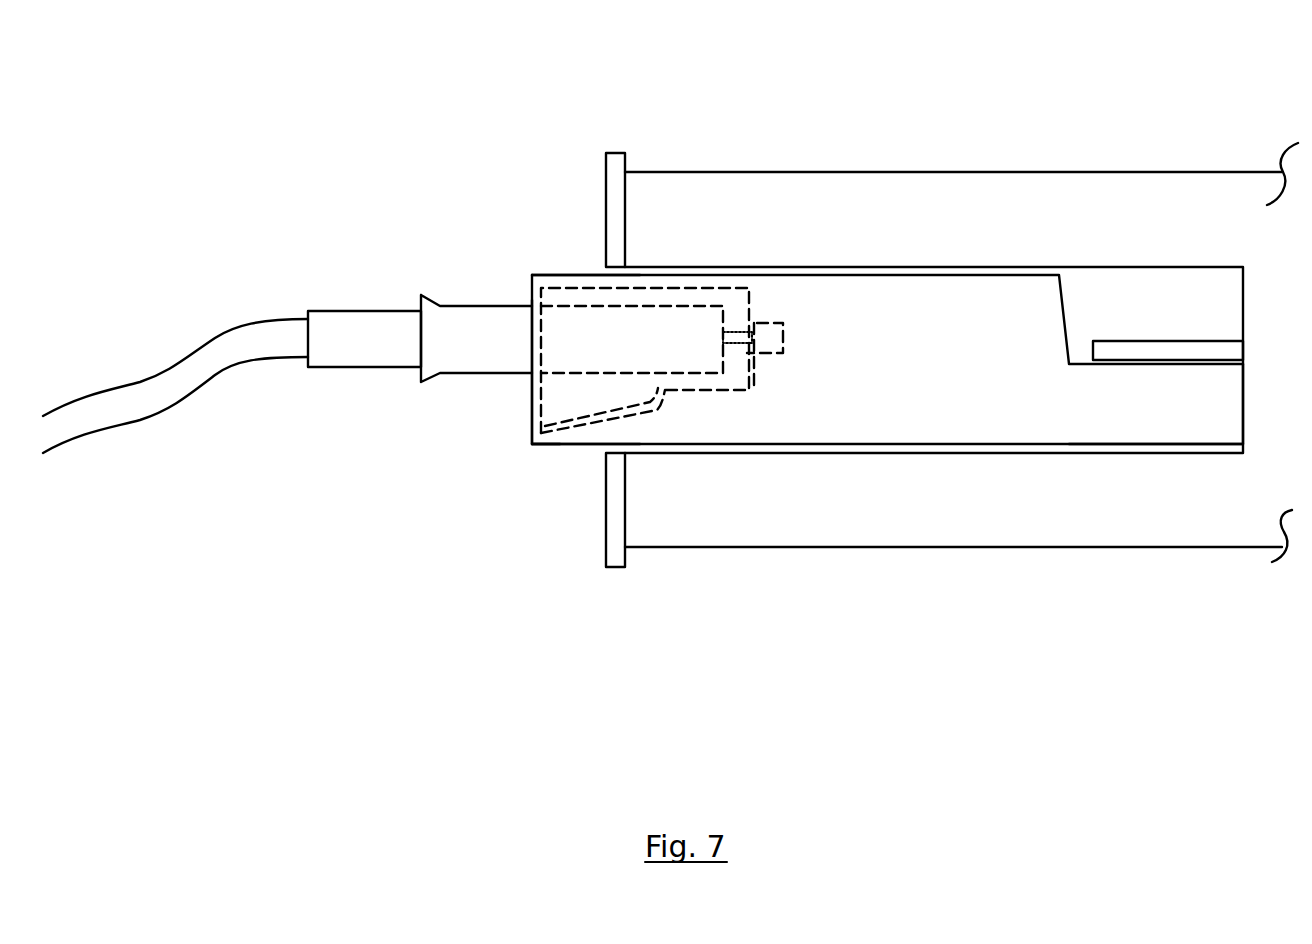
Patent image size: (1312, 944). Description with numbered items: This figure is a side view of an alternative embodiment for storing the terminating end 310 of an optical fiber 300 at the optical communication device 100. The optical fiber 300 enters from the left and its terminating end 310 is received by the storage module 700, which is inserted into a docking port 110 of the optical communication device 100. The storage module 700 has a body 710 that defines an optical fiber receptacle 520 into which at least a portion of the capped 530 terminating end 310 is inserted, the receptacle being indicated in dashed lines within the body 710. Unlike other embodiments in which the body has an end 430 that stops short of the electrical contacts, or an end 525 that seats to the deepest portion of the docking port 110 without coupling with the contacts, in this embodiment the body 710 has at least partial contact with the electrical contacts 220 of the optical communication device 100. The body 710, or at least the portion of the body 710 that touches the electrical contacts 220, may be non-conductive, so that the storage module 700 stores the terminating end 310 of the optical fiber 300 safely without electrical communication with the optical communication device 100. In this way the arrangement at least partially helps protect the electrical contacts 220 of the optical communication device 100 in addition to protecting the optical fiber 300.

The optical communication device 100 is at (755, 128).
The docking port 110 is at (975, 265).
The electrical contacts 220 is at (1127, 357).
The optical fiber 300 is at (186, 294).
The terminating end 310 is at (362, 378).
The end 430 is at (738, 345).
The OFR 520 is at (567, 283).
The end 525 is at (1243, 413).
The capped 530 is at (575, 428).
The storage module 700 is at (569, 242).
The body 710 is at (533, 443).